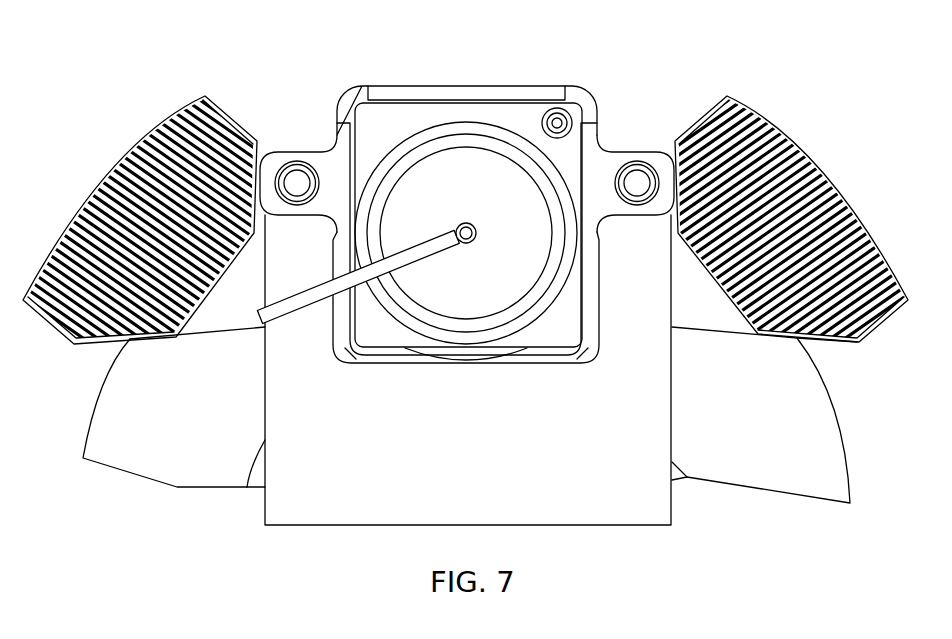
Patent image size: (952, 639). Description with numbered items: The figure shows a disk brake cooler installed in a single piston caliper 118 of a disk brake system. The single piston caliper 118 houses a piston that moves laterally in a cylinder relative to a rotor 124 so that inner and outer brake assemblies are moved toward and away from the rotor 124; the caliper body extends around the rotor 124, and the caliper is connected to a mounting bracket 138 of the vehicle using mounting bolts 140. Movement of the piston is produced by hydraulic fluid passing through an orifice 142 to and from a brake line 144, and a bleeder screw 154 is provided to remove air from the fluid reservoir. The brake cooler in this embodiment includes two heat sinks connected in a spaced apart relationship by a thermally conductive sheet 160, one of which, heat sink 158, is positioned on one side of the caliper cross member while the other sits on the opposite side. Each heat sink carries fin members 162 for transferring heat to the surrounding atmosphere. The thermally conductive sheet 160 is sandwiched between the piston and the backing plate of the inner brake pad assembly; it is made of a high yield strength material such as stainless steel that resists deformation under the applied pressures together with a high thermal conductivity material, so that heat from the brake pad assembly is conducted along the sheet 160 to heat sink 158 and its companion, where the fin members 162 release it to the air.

The single piston caliper 118 is at (502, 87).
The rotor 124 is at (108, 443).
The mounting bracket 138 is at (583, 478).
The mounting bolts 140 is at (297, 170).
The orifice 142 is at (481, 233).
The brake line 144 is at (315, 292).
The bleeder screw 154 is at (560, 112).
The heat sink 158 is at (158, 130).
The thermally conductive sheet 160 is at (222, 302).
The fin members 162 is at (75, 213).